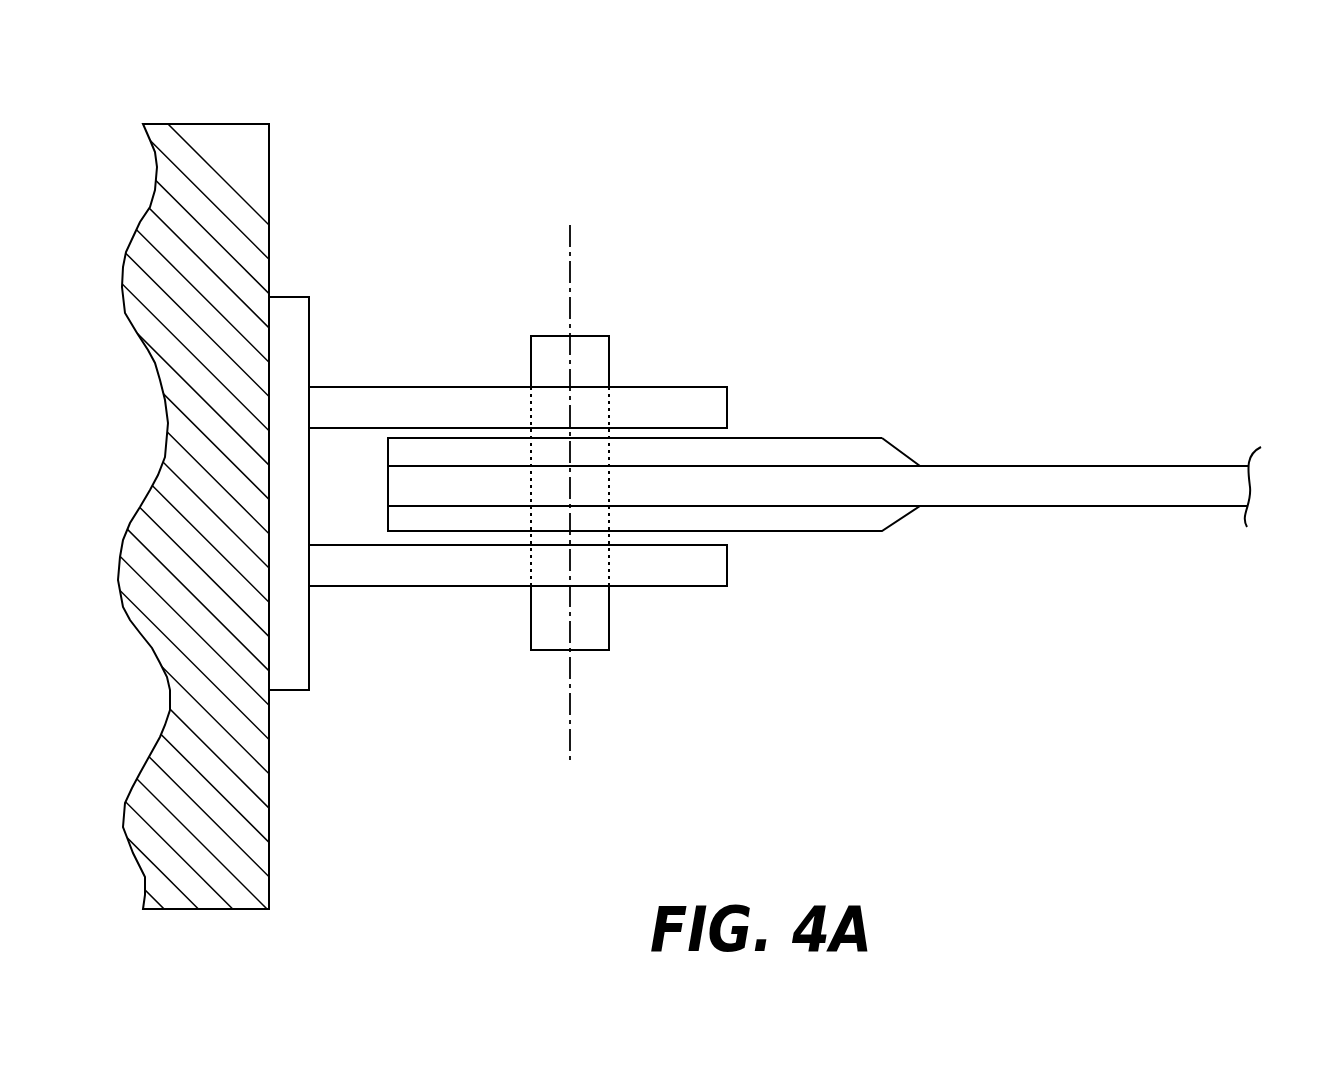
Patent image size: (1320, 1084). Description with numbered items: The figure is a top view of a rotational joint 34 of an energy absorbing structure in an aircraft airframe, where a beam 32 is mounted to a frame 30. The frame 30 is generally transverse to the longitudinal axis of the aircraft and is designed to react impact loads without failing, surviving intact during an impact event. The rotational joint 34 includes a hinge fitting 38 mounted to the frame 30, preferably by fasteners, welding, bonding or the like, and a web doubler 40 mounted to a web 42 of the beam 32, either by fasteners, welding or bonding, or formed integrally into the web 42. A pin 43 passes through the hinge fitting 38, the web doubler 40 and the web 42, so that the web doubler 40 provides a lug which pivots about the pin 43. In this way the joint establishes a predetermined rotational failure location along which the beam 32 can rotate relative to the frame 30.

The frame 30 is at (260, 152).
The beam 32 is at (834, 437).
The rotational joint 34 is at (609, 429).
The hinge fitting 38 is at (405, 386).
The web doubler 40 is at (868, 438).
The web 42 is at (1188, 464).
The pin 43 is at (596, 493).